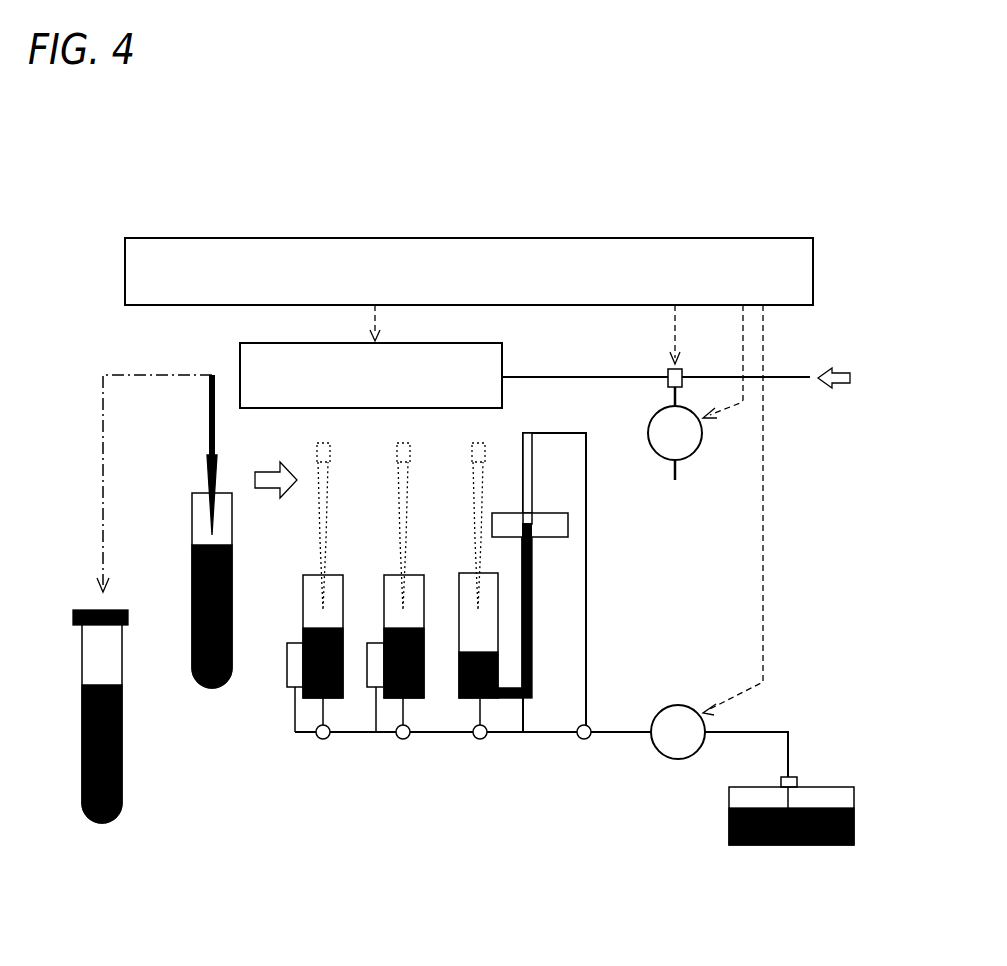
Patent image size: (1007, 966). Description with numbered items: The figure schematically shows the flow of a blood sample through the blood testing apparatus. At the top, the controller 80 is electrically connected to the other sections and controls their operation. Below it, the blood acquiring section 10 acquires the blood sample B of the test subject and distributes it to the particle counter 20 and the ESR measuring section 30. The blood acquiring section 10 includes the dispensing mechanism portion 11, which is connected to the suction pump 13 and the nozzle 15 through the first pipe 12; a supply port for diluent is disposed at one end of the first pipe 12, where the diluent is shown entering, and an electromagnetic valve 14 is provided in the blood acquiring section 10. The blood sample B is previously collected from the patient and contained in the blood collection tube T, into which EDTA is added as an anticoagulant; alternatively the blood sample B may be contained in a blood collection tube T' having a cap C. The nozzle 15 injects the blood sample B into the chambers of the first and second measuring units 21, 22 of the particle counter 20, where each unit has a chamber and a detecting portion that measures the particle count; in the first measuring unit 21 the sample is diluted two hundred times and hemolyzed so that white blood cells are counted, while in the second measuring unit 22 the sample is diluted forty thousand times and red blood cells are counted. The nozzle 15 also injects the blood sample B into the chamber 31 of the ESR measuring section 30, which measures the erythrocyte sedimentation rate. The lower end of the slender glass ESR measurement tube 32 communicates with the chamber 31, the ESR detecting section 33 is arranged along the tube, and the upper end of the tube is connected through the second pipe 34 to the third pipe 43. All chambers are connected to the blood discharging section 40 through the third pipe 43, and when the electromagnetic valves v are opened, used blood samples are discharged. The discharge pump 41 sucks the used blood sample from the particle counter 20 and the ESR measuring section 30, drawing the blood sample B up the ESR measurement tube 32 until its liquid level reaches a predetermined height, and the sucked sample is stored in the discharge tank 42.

The controller 80 is at (125, 268).
The blood acquiring section 10 is at (176, 350).
The dispensing mechanism portion 11 is at (503, 352).
The first pipe 12 is at (628, 377).
The suction pump 13 is at (650, 426).
The electromagnetic valve 14 is at (683, 373).
The nozzle 15 is at (218, 436).
The blood collection tube T is at (198, 570).
The blood sample B is at (192, 565).
The cap C is at (128, 627).
The blood collection tube T' is at (130, 724).
The particle counter 20 is at (346, 612).
The first measuring unit 21 is at (290, 623).
The second measuring unit 22 is at (375, 616).
The ESR measuring section 30 is at (545, 625).
The chamber 31 is at (459, 600).
The ESR measurement tube 32 is at (532, 668).
The ESR detecting section 33 is at (553, 543).
The second pipe 34 is at (588, 545).
The third pipe 43 is at (443, 735).
The electromagnetic valves v is at (323, 740).
The blood discharging section 40 is at (744, 744).
The discharge pump 41 is at (665, 707).
The discharge tank 42 is at (729, 797).